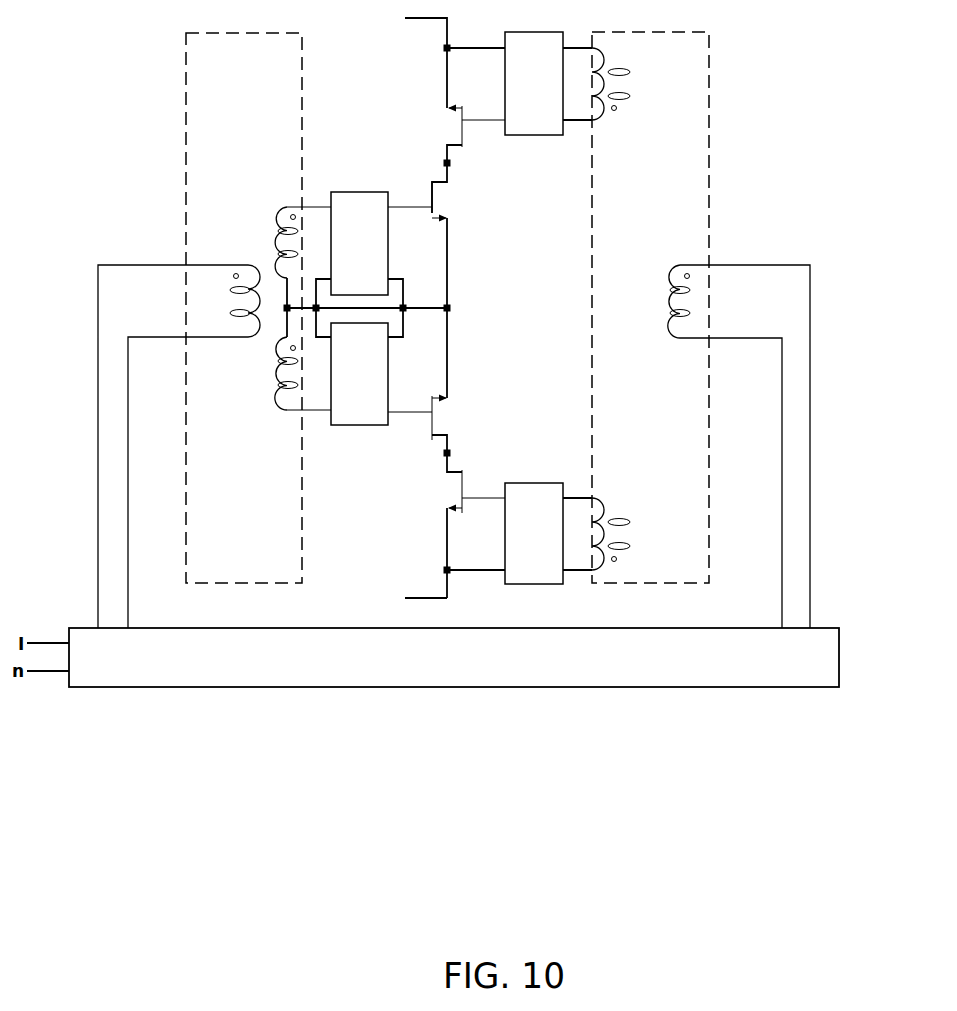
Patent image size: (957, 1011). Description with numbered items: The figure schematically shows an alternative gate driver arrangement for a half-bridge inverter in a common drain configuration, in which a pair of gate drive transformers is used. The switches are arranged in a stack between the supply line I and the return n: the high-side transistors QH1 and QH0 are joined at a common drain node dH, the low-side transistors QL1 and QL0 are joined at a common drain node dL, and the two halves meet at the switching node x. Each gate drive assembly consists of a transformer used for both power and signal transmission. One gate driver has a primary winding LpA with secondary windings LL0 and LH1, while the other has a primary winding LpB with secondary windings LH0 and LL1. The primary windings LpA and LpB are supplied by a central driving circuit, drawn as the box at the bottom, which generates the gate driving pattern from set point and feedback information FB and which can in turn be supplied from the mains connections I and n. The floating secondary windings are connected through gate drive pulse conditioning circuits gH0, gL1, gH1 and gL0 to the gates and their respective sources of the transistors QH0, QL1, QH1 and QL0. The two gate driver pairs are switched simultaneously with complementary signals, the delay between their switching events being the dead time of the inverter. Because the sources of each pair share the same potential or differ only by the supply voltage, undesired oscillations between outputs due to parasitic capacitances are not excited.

The mains supply line I is at (450, 58).
The mains neutral line n is at (448, 588).
The feedback information input FB is at (839, 658).
The high-side switch transistor QH1 is at (445, 134).
The gate drive pulse conditioning circuit gH1 is at (534, 83).
The secondary winding LH1 is at (620, 84).
The high-side drain node dH is at (450, 163).
The high-side switch transistor QH0 is at (466, 235).
The gate drive pulse conditioning circuit gH0 is at (381, 243).
The gate drive pulse conditioning circuit gL1 is at (381, 374).
The switching node x is at (447, 308).
The secondary winding LH0 is at (280, 257).
The secondary winding LL1 is at (280, 359).
The primary winding LpA is at (179, 446).
The low-side switch transistor QL1 is at (461, 380).
The low-side drain node dL is at (450, 453).
The low-side switch transistor QL0 is at (427, 525).
The gate drive pulse conditioning circuit gL0 is at (512, 533).
The secondary winding LL0 is at (618, 534).
The primary winding LpB is at (715, 446).